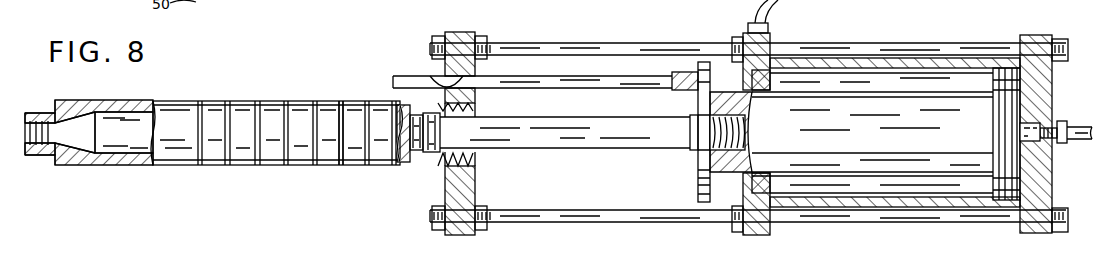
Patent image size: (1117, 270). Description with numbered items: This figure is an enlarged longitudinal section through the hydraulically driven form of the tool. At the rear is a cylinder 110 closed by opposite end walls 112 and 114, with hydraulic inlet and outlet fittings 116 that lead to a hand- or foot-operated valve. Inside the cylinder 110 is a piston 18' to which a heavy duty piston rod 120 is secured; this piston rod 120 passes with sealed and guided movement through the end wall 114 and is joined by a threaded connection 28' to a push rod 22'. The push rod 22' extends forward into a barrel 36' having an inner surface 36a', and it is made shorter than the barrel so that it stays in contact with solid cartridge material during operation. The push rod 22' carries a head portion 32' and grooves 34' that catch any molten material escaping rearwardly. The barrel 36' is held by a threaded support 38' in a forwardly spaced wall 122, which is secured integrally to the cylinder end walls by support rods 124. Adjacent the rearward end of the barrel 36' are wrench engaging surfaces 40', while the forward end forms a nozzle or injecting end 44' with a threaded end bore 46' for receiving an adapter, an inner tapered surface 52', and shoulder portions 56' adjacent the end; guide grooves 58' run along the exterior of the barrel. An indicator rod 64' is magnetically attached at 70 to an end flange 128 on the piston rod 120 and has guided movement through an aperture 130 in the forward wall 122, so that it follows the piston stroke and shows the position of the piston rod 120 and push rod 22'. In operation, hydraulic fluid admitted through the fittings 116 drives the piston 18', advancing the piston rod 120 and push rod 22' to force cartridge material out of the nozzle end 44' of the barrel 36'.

The piston 18' is at (989, 109).
The push rod 22' is at (569, 121).
The threaded connection 28' is at (751, 132).
The head portion 32' is at (452, 132).
The grooves 34' is at (406, 149).
The barrel 36' is at (275, 118).
The inner surface 36a' is at (124, 116).
The threaded support 38' is at (480, 105).
The wrench engaging surfaces 40' is at (445, 175).
The nozzle or injecting end 44' is at (100, 120).
The threaded end bore 46' is at (38, 119).
The inner tapered surface 52' is at (78, 114).
The shoulder portions 56' is at (43, 149).
The guide grooves 58' is at (349, 118).
The indicator rod 64' is at (545, 54).
The flange 70 is at (702, 68).
The cylinder 110 is at (900, 60).
The end wall 112 is at (1052, 103).
The end wall 114 is at (770, 42).
The hydraulic inlet and outlet fittings 116 is at (750, 9).
The piston rod 120 is at (860, 105).
The forwardly spaced wall 122 is at (458, 34).
The support rods 124 is at (545, 43).
The end flange 128 is at (700, 188).
The aperture 130 is at (440, 77).